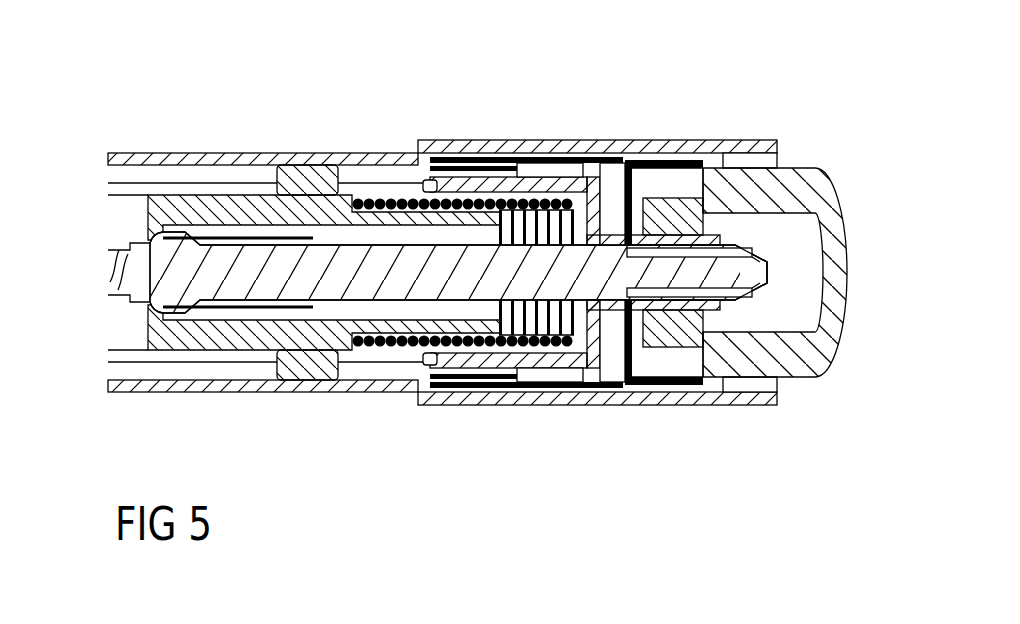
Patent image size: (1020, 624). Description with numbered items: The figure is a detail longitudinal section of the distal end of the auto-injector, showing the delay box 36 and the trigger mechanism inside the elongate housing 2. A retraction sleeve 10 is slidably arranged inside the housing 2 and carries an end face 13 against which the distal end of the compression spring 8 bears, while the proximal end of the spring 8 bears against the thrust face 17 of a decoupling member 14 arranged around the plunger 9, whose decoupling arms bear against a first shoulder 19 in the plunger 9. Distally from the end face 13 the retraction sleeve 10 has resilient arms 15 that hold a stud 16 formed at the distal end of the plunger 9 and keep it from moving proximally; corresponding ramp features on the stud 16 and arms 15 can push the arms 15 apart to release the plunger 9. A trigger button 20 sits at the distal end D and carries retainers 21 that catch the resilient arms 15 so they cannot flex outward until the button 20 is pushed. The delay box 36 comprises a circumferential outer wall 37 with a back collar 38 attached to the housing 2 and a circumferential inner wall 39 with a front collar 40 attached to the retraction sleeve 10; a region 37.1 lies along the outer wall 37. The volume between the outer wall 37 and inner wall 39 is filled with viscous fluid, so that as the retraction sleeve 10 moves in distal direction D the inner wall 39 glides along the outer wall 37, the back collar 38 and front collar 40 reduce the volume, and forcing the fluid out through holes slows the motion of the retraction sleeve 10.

The housing 2 is at (282, 152).
The compression spring 8 is at (365, 342).
The plunger 9 is at (305, 379).
The retraction sleeve 10 is at (447, 177).
The end face 13 is at (655, 198).
The decoupling member 14 is at (282, 379).
The resilient arms 15 is at (753, 246).
The stud 16 is at (755, 288).
The thrust face 17 is at (345, 292).
The first shoulder 19 is at (157, 278).
The trigger button 20 is at (820, 372).
The retainers 21 is at (701, 180).
The delay box 36 is at (592, 177).
The outer wall 37 is at (482, 157).
The contact window 37.1 is at (505, 163).
The back collar 38 is at (632, 160).
The inner wall 39 is at (557, 210).
The front collar 40 is at (410, 152).
The distal direction D is at (889, 279).